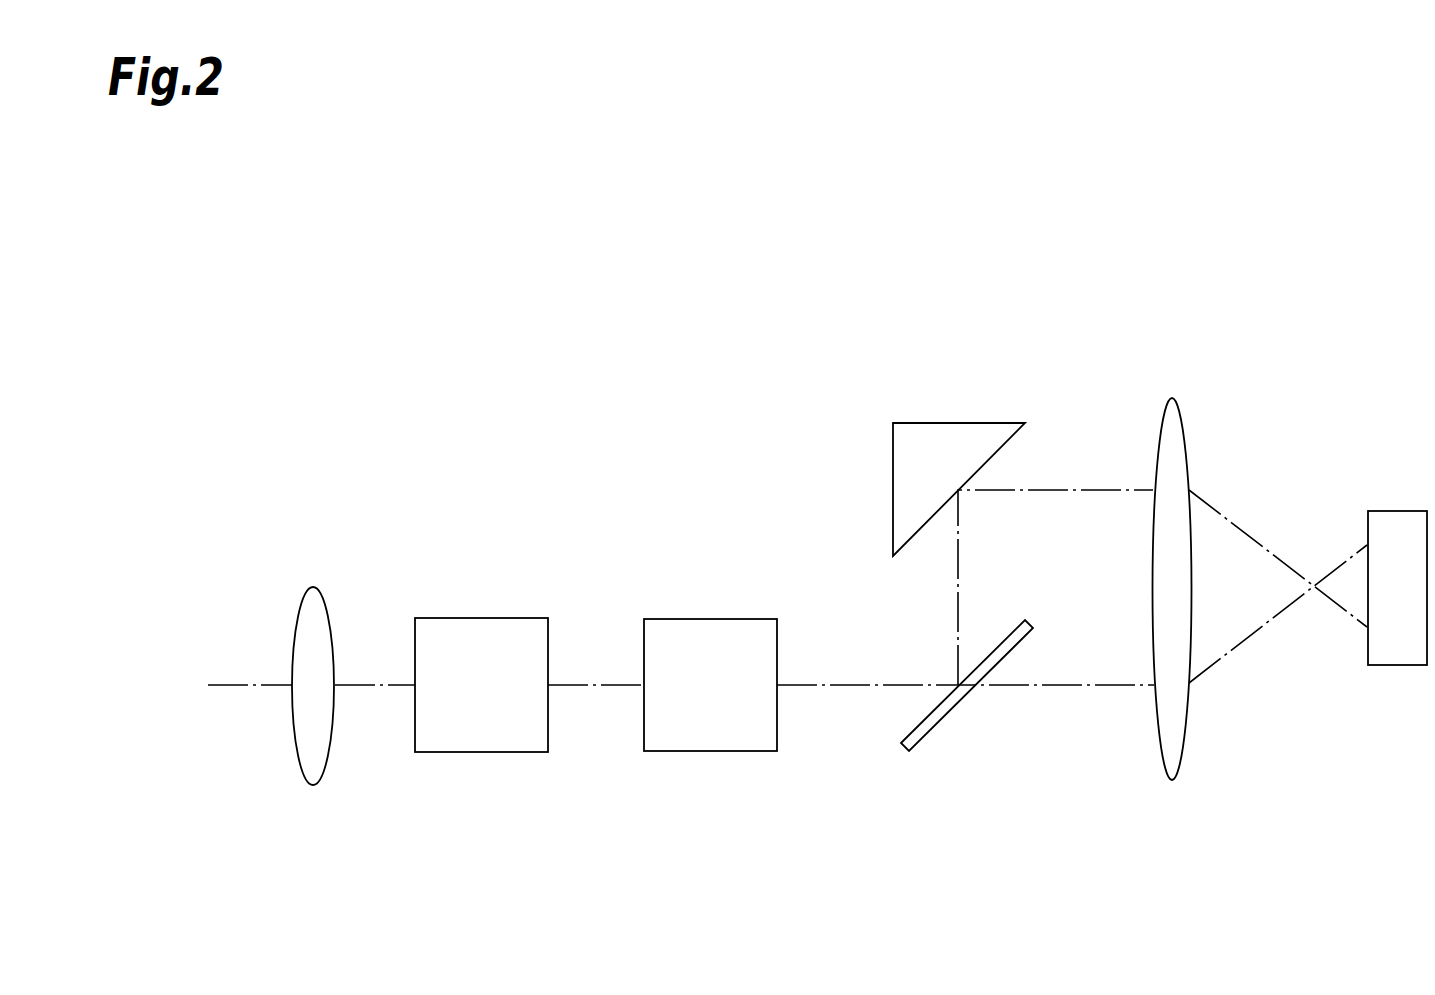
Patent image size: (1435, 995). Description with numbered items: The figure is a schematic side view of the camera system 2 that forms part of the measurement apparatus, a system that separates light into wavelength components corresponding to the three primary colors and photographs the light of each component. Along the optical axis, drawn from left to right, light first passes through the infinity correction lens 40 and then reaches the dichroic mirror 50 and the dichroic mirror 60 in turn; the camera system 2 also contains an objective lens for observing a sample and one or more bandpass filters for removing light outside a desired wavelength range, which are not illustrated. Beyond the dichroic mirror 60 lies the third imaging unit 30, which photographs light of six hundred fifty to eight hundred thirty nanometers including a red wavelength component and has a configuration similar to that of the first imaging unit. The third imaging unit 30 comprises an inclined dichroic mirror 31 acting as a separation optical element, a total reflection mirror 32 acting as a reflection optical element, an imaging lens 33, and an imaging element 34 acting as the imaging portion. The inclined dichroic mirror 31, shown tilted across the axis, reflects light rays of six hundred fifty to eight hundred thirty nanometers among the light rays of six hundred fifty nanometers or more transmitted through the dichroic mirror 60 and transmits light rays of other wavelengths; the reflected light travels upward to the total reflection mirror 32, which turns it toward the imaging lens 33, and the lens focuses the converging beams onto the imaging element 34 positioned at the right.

The camera system 2 is at (475, 380).
The third imaging unit 30 is at (1138, 378).
The inclined dichroic mirror 31 is at (950, 717).
The total reflection mirror 32 is at (916, 422).
The imaging lens 33 is at (1172, 782).
The imaging element 34 is at (1408, 510).
The infinity correction lens 40 is at (312, 585).
The dichroic mirror 50 is at (506, 617).
The dichroic mirror 60 is at (736, 618).